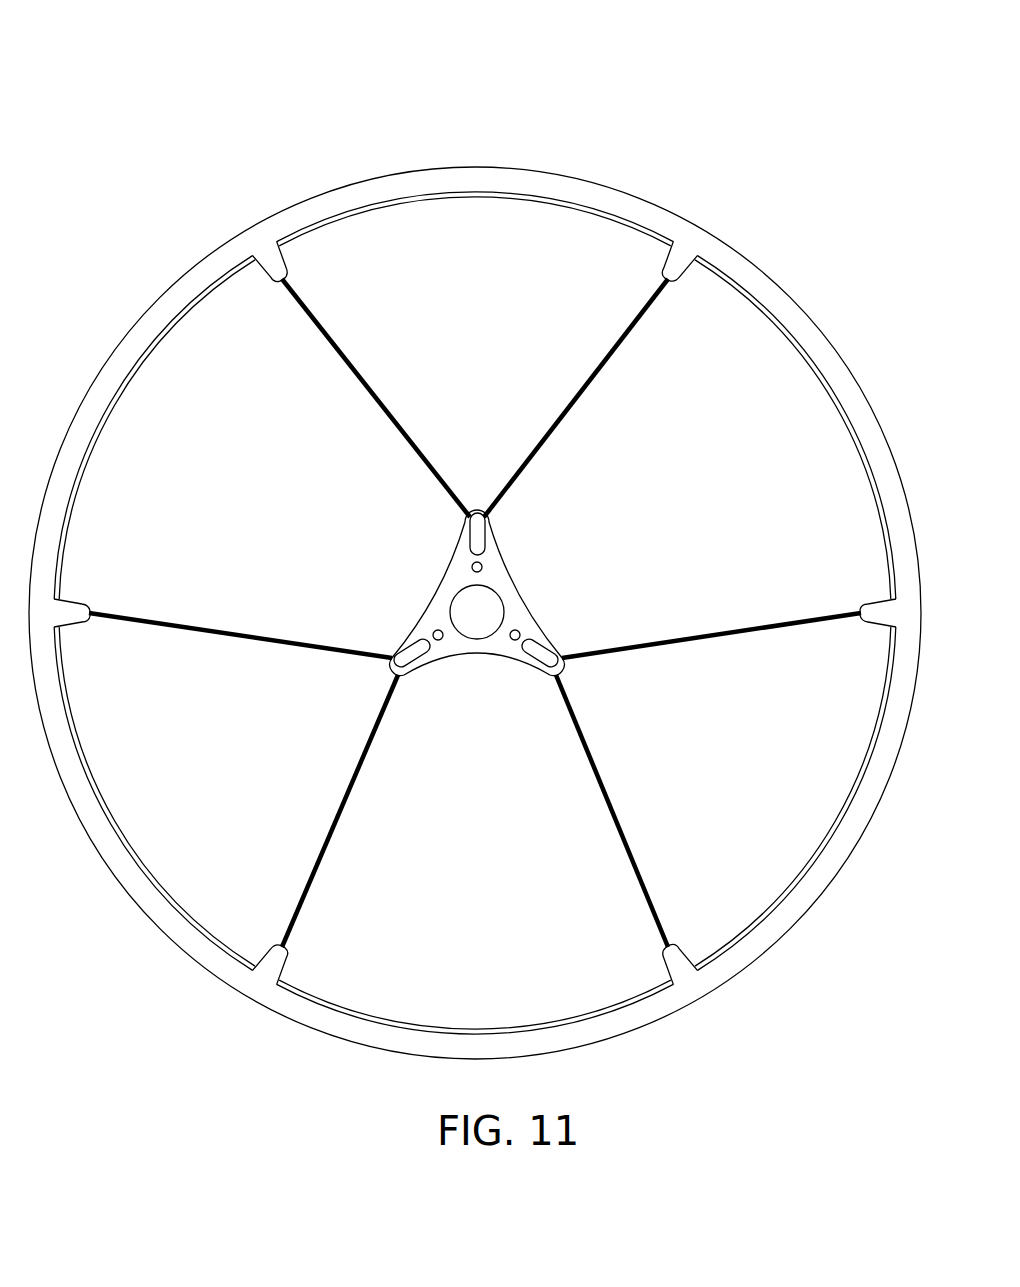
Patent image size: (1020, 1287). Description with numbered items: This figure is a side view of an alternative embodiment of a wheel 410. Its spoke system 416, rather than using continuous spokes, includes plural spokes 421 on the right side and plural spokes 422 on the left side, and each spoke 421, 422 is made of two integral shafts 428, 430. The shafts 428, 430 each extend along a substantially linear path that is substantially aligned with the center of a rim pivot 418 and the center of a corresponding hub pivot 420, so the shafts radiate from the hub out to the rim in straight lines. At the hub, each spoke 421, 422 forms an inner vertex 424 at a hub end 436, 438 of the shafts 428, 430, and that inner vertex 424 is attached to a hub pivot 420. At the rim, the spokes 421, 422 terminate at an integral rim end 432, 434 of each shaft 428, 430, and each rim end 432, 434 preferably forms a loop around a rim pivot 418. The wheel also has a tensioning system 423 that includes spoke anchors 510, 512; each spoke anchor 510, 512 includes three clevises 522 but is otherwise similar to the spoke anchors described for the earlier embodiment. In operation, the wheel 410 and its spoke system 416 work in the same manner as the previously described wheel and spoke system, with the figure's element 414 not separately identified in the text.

The wheel 410 is at (797, 120).
The tire 414 is at (679, 208).
The spoke system 416 is at (812, 270).
The rim pivot 418 is at (698, 290).
The hub pivot 420 is at (541, 705).
The spoke 421 is at (380, 393).
The spoke 422 is at (576, 398).
The tensioning system 423 is at (622, 514).
The inner vertex 424 is at (564, 666).
The shaft 428 is at (343, 783).
The shaft 430 is at (205, 627).
The rim end 432 is at (282, 940).
The rim end 434 is at (90, 603).
The hub end 436 is at (392, 670).
The hub end 438 is at (391, 653).
The spoke anchor 510 is at (518, 597).
The spoke anchor 512 is at (477, 567).
The clevis 522 is at (539, 637).